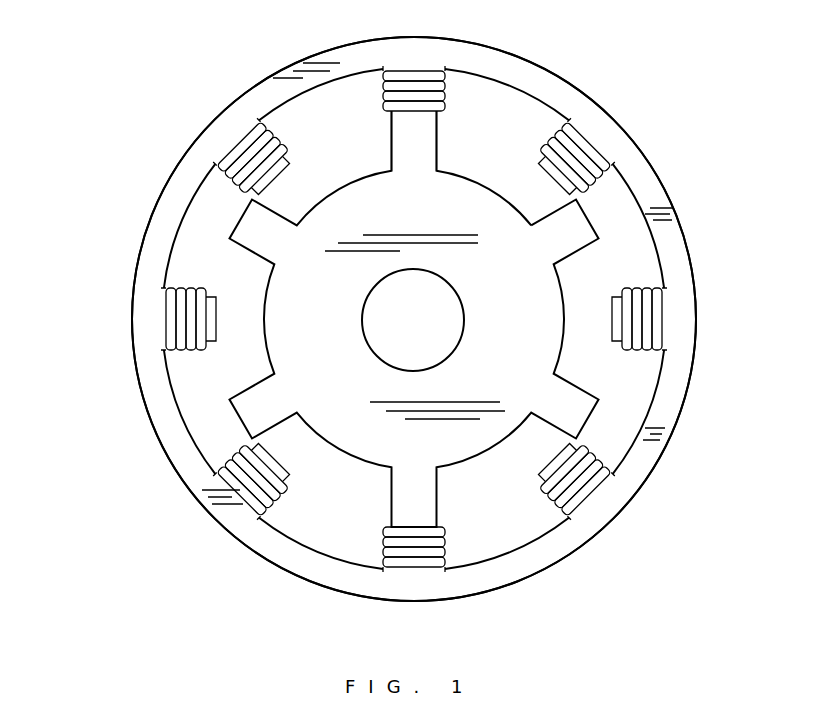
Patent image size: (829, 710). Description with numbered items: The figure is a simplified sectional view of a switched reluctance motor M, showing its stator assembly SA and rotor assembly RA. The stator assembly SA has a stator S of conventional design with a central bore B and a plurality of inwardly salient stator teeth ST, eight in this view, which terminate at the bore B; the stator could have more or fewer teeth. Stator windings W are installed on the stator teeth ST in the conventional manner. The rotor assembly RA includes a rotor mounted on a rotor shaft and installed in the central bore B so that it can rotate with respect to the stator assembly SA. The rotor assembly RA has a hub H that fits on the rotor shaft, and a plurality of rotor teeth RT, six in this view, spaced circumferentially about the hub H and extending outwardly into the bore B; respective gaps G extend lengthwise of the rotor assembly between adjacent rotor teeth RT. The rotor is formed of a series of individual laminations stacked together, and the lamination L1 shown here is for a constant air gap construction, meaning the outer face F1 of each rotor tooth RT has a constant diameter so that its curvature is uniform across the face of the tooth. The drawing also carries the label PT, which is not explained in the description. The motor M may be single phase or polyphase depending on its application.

The switched reluctance motor M is at (96, 215).
The stator S is at (682, 201).
The stator assembly SA is at (150, 446).
The rotor teeth RT is at (272, 243).
The pole tooth PT is at (425, 151).
The stator teeth ST is at (388, 112).
The stator windings W is at (378, 108).
The gaps G is at (317, 195).
The central bore B is at (525, 540).
The hub H is at (363, 152).
The outer face of rotor tooth F1 is at (240, 213).
The rotor assembly RA is at (276, 456).
The lamination L1 is at (572, 368).